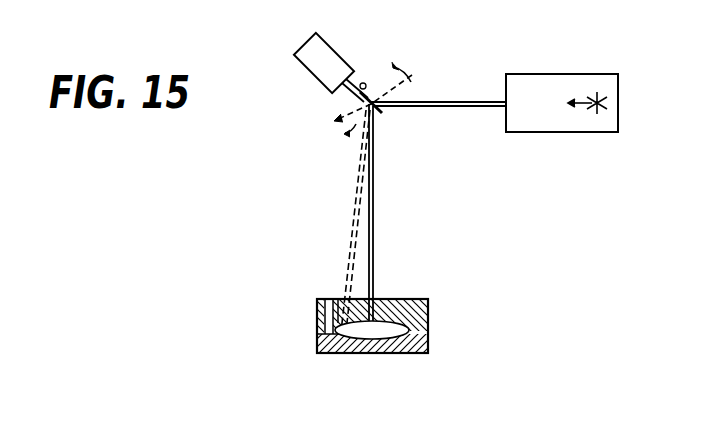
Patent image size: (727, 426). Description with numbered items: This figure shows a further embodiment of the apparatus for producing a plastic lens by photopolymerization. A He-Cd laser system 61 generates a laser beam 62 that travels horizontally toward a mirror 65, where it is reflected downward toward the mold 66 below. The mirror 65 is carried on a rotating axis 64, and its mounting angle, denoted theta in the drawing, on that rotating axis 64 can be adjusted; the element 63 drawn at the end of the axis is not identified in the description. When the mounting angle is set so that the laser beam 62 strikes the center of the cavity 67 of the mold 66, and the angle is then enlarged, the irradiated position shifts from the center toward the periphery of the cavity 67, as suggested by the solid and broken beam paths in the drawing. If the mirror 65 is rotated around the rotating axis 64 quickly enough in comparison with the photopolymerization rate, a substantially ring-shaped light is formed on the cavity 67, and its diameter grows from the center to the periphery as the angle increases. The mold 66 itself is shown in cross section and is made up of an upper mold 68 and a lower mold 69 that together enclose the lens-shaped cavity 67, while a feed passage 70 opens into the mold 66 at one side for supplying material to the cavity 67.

The He-Cd laser system 61 is at (558, 127).
The laser beam 62 is at (432, 108).
The galvanometer scanner 63 is at (303, 66).
The rotating axis 64 is at (361, 82).
The mirror 65 is at (364, 114).
The mold 66 is at (384, 325).
The cavity 67 is at (370, 340).
The upper mold 68 is at (400, 300).
The lower mold 69 is at (333, 341).
The feed passage 70 is at (326, 312).